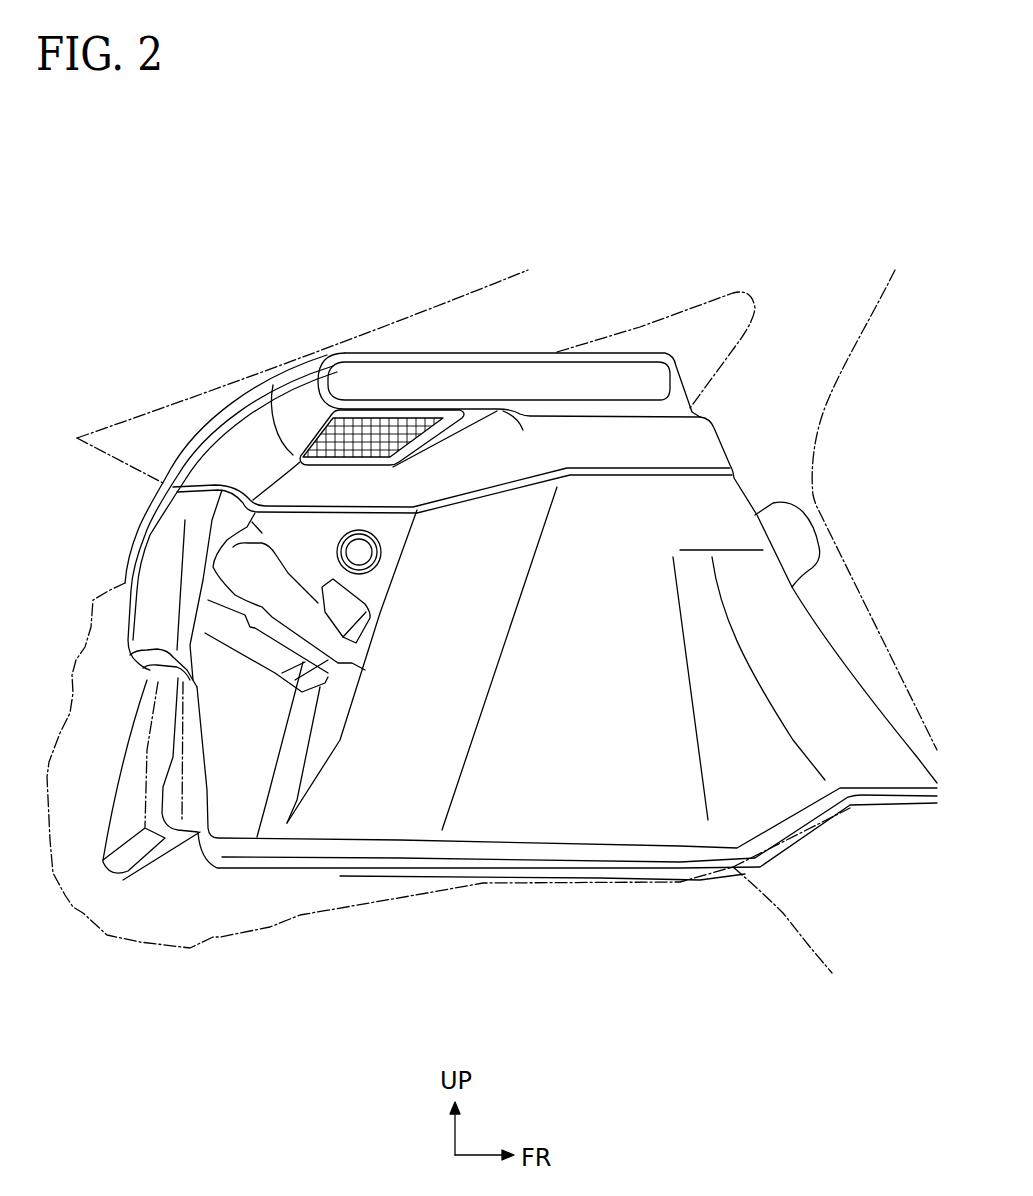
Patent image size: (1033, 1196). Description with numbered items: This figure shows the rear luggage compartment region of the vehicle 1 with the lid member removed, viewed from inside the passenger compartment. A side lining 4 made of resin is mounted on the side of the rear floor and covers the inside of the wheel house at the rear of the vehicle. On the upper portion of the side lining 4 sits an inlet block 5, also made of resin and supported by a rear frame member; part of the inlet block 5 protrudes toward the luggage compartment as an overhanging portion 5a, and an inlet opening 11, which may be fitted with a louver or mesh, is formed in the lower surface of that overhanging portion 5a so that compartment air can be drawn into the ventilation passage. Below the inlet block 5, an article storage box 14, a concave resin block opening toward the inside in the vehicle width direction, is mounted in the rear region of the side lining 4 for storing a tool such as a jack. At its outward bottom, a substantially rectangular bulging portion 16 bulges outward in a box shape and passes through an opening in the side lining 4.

The vehicle 1 is at (578, 254).
The side lining 4 is at (580, 829).
The inlet block 5 is at (427, 353).
The overhanging portion 5a is at (300, 456).
The inlet opening 11 is at (290, 453).
The article storage box 14 is at (305, 802).
The bulging portion 16 is at (233, 813).